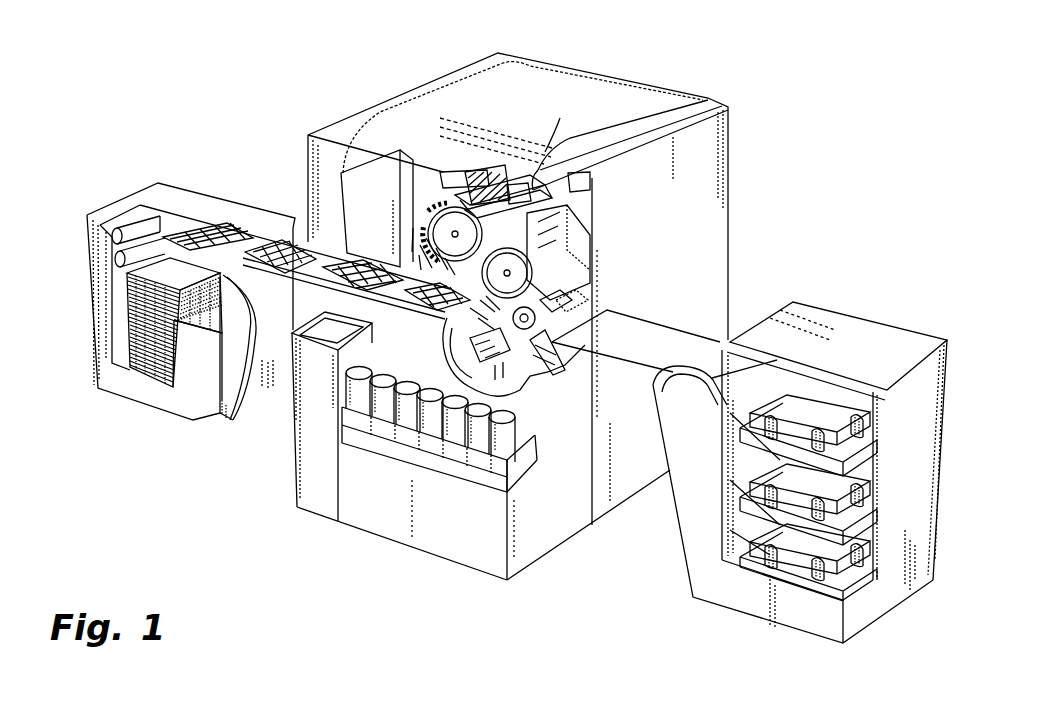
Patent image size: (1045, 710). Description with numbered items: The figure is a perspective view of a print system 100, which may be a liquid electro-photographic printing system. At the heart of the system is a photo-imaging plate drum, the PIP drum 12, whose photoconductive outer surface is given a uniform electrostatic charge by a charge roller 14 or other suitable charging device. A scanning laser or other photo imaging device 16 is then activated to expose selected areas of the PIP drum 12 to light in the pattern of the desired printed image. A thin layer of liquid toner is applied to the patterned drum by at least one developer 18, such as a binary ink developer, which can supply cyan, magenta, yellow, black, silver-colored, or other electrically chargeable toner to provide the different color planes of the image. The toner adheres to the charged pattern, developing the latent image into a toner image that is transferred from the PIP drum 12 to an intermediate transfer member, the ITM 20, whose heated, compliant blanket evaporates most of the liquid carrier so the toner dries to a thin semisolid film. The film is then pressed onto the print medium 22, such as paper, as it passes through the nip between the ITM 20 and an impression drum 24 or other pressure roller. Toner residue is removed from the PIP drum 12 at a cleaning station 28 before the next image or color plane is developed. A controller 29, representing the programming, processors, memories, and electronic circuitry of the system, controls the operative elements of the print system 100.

The print system 100 is at (105, 49).
The photo-imaging plate (PIP) drum 12 is at (447, 222).
The charge roller 14 is at (470, 192).
The photo imaging device 16 is at (590, 190).
The developer 18 is at (399, 242).
The intermediate transfer drum/member (ITM) 20 is at (520, 283).
The print medium 22 is at (372, 292).
The impression drum 24 is at (575, 301).
The cleaning station 28 is at (507, 188).
The controller 29 is at (310, 317).